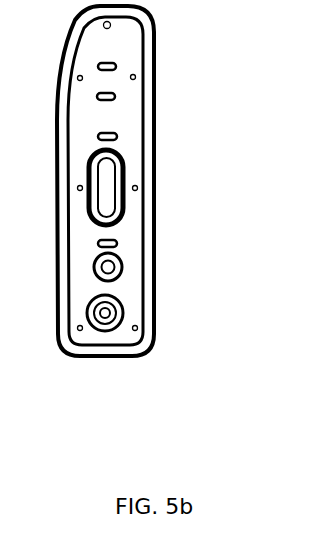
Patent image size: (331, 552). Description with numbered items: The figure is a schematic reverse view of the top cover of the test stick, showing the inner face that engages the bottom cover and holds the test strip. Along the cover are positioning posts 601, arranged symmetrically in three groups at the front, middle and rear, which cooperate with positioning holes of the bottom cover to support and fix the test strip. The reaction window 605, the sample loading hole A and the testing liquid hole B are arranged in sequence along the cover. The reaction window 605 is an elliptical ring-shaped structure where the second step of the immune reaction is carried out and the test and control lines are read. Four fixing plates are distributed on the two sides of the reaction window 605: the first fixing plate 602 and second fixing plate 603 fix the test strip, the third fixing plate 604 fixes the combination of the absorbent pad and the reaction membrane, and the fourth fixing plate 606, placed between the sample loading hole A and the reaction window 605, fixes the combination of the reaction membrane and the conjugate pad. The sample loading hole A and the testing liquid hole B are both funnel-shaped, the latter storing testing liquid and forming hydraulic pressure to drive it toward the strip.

The positioning post 601 is at (111, 26).
The first fixing plate 602 is at (116, 66).
The second fixing plate 603 is at (115, 97).
The third fixing plate 604 is at (117, 137).
The reaction window 605 is at (103, 200).
The fourth fixing plate 606 is at (117, 243).
The sample loading hole A is at (108, 275).
The testing liquid hole B is at (105, 315).